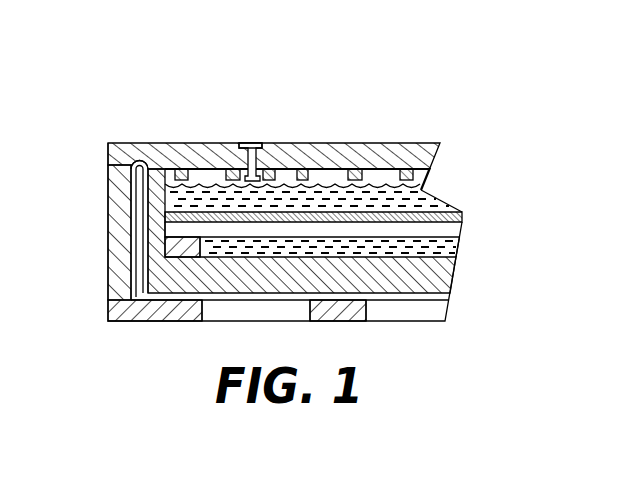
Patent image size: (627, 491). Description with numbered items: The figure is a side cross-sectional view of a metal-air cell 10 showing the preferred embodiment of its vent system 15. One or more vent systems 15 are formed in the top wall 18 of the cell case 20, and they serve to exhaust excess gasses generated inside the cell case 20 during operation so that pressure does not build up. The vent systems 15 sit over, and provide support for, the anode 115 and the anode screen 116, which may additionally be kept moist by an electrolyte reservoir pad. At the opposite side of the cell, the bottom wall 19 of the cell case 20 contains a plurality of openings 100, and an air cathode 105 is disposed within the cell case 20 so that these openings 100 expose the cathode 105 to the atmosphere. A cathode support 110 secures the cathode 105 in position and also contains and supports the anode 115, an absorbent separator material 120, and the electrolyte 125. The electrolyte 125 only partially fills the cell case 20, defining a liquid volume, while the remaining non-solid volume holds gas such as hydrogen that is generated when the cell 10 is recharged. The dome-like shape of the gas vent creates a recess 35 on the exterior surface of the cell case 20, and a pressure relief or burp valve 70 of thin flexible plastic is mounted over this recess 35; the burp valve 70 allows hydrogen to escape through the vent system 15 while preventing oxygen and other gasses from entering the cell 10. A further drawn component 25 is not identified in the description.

The metal-air cell 10 is at (80, 292).
The vent system 15 is at (270, 130).
The top wall 18 is at (128, 158).
The bottom wall 19 is at (201, 321).
The cell case 20 is at (147, 330).
The electrodes 25 is at (350, 169).
The recess 35 is at (241, 143).
The burp valve 70 is at (250, 143).
The openings 100 is at (256, 309).
The air cathode 105 is at (440, 278).
The cathode support 110 is at (163, 250).
The anode 115 is at (462, 217).
The anode screen 116 is at (423, 192).
The absorbent separator material 120 is at (172, 228).
The electrolyte 125 is at (430, 203).